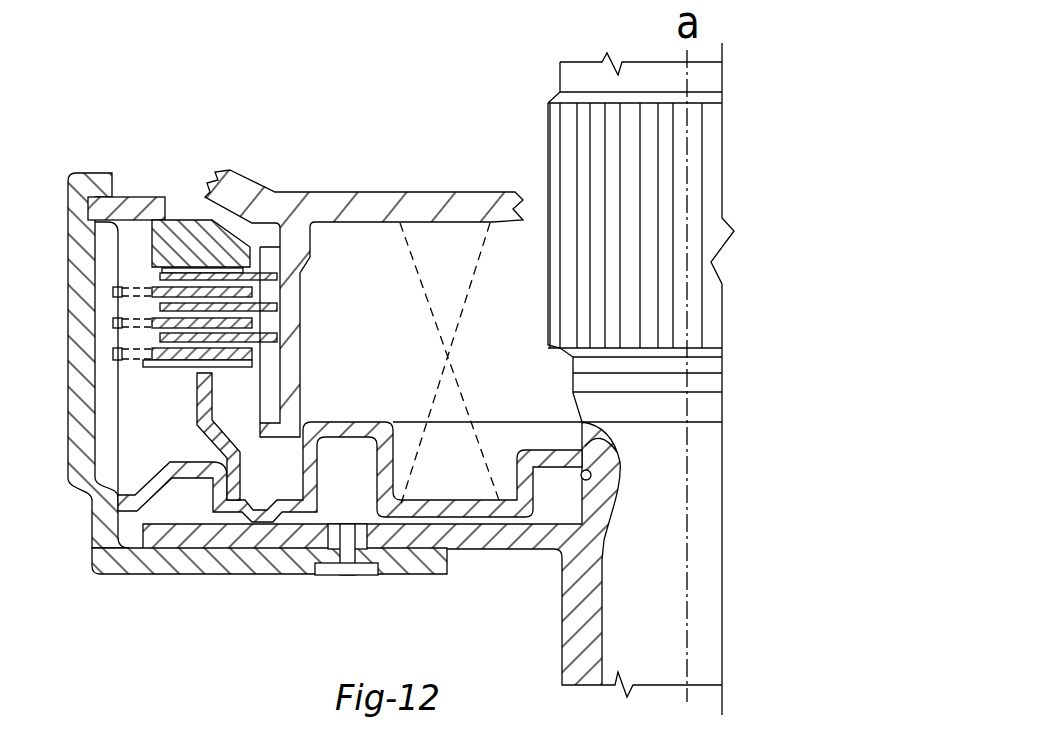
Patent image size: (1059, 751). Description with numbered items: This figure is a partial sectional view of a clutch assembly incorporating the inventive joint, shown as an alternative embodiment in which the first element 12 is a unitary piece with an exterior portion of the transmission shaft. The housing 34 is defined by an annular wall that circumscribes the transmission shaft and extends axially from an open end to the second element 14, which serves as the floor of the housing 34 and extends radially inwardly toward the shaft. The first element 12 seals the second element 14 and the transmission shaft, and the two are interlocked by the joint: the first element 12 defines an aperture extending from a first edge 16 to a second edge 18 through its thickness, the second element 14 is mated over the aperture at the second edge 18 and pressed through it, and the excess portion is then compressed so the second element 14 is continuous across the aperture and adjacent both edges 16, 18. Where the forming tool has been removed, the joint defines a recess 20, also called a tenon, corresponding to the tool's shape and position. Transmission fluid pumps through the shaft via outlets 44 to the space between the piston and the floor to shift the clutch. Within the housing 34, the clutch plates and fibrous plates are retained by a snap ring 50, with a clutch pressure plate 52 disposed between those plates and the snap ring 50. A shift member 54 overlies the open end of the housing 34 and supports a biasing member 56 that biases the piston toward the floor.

The first element 12 is at (503, 543).
The second element 14 is at (182, 574).
The first edge 16 is at (328, 528).
The second edge 18 is at (358, 565).
The recess 20 is at (342, 578).
The housing 34 is at (64, 175).
The outlets 44 is at (622, 448).
The snap ring 50 is at (138, 196).
The clutch pressure plate 52 is at (190, 218).
The shift member 54 is at (378, 192).
The biasing member 56 is at (463, 313).